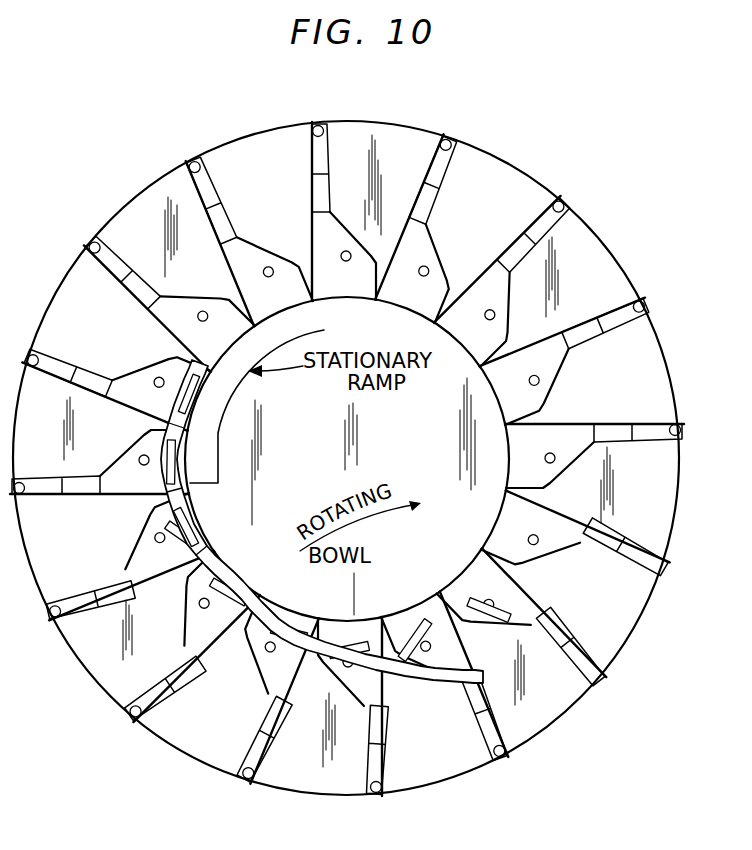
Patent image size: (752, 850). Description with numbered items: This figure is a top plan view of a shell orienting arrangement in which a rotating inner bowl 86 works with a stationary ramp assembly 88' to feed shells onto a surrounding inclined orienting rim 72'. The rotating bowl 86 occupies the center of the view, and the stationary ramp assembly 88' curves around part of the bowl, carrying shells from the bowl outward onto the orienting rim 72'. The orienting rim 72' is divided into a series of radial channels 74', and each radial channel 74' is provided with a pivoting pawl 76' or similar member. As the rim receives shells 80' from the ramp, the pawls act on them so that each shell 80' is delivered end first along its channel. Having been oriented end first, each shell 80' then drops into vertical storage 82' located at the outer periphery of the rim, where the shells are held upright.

The orienting rim 72' is at (346, 454).
The shell 80' is at (543, 204).
The vertical storage 82' is at (596, 193).
The radial channel 74' is at (520, 282).
The pivoting pawl 76' is at (517, 325).
The stationary ramp assembly 88' is at (322, 506).
The rotating bowl 86 is at (347, 459).